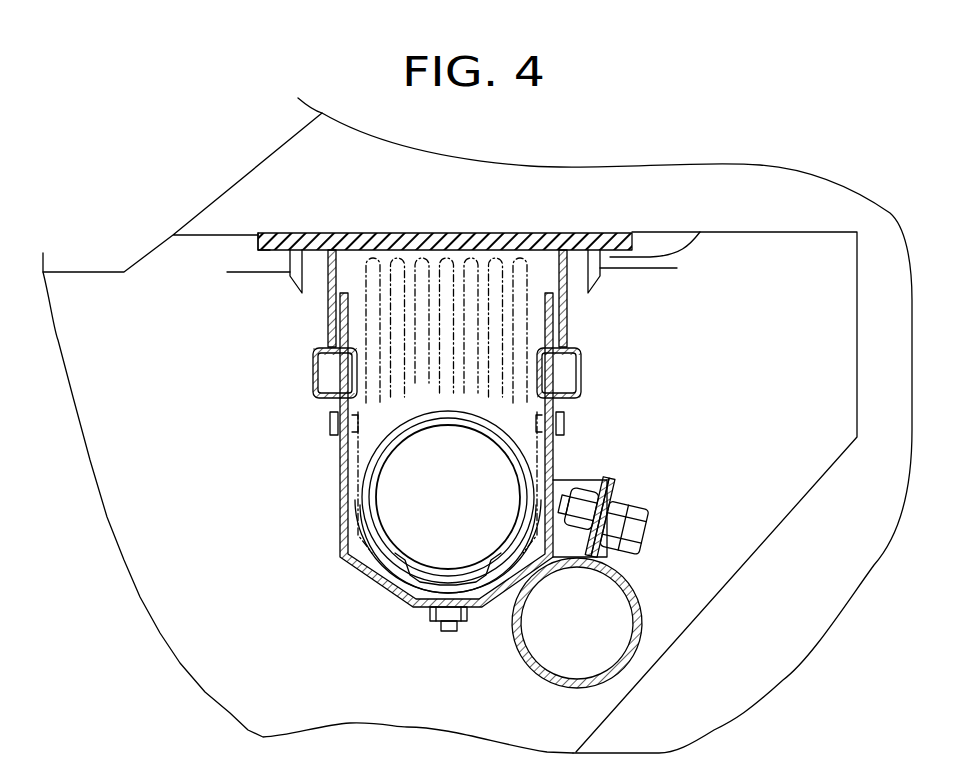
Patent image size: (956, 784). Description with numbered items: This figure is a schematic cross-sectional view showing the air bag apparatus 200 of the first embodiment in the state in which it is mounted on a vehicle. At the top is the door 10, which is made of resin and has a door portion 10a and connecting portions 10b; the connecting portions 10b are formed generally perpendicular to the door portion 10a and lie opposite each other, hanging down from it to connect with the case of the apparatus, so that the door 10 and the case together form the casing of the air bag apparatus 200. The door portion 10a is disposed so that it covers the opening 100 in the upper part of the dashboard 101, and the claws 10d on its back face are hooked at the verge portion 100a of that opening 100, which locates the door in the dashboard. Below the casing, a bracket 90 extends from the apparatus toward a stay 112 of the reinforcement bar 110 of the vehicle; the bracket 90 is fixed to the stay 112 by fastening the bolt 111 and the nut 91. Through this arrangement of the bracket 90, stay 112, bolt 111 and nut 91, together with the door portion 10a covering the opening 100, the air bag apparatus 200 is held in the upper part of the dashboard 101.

The door 10 is at (306, 230).
The door portion 10a is at (378, 231).
The connecting portions 10b is at (328, 318).
The claws 10d is at (294, 284).
The opening 100 is at (626, 231).
The verge portion 100a is at (702, 228).
The dashboard 101 is at (808, 231).
The air bag apparatus 200 is at (341, 598).
The bracket 90 is at (610, 490).
The nut 91 is at (590, 495).
The bolt 111 is at (640, 538).
The stay 112 is at (622, 488).
The reinforcement bar 110 is at (528, 662).